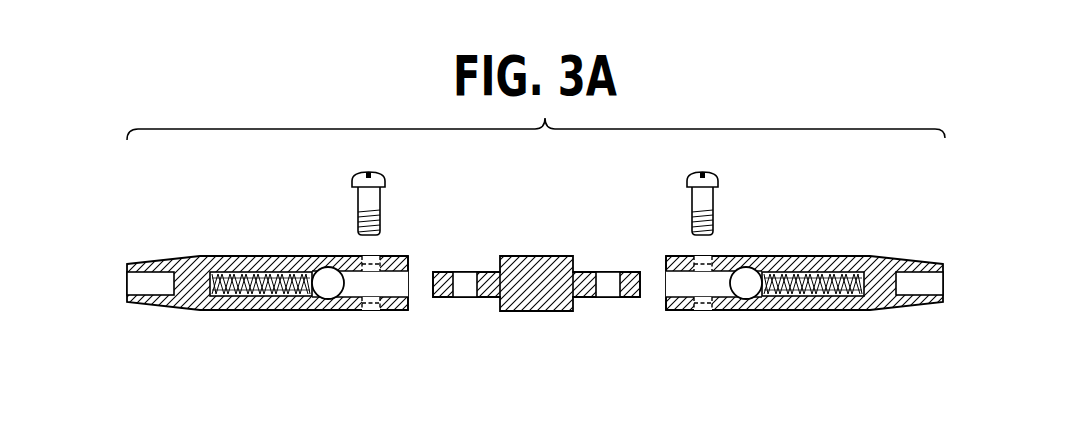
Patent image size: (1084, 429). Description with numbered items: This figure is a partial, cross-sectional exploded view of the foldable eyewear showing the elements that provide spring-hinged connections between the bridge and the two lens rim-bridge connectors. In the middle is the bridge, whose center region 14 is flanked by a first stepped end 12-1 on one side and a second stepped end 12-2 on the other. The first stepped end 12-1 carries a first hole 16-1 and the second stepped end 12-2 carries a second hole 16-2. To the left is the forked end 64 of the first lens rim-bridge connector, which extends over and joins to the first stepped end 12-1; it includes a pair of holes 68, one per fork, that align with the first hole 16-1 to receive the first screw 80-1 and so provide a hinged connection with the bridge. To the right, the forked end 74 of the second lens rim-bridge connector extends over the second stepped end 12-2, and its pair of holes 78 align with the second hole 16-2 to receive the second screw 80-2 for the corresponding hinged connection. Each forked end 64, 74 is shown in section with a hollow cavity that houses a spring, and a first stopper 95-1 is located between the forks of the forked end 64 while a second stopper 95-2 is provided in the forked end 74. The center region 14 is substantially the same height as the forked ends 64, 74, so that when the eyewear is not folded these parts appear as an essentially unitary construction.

The center region 14 is at (543, 270).
The first stepped end 12-1 is at (456, 283).
The second stepped end 12-2 is at (623, 283).
The first hole 16-1 is at (467, 277).
The second hole 16-2 is at (608, 277).
The forked end 64 is at (253, 318).
The forked end 74 is at (843, 318).
The pair of holes 68 is at (365, 266).
The pair of holes 78 is at (697, 266).
The first screw 80-1 is at (382, 199).
The second screw 80-2 is at (714, 199).
The first stopper 95-1 is at (333, 283).
The second stopper 95-2 is at (748, 285).